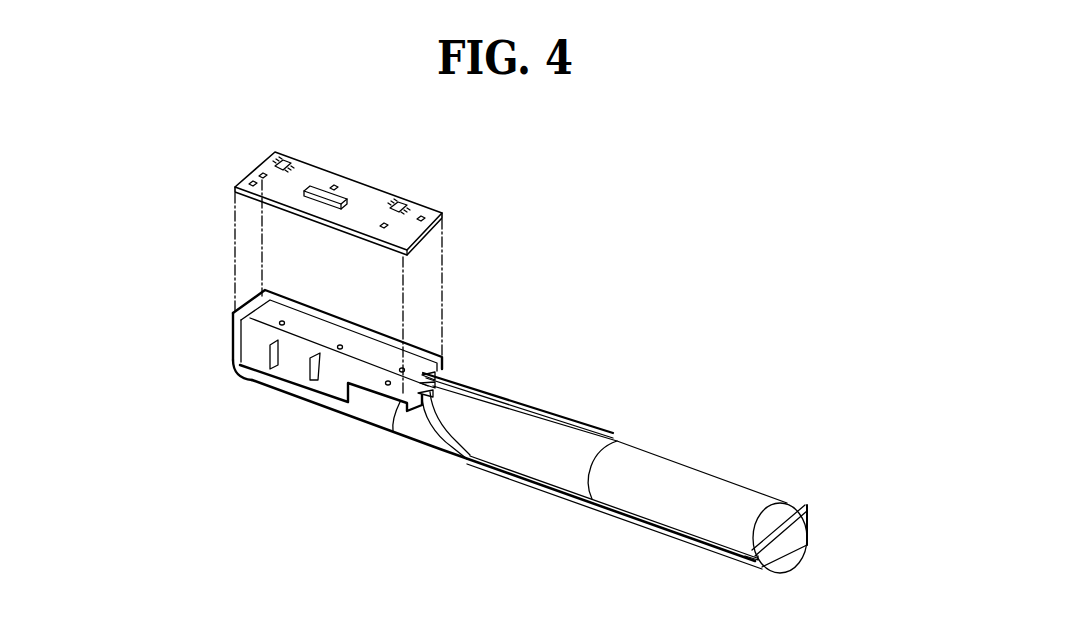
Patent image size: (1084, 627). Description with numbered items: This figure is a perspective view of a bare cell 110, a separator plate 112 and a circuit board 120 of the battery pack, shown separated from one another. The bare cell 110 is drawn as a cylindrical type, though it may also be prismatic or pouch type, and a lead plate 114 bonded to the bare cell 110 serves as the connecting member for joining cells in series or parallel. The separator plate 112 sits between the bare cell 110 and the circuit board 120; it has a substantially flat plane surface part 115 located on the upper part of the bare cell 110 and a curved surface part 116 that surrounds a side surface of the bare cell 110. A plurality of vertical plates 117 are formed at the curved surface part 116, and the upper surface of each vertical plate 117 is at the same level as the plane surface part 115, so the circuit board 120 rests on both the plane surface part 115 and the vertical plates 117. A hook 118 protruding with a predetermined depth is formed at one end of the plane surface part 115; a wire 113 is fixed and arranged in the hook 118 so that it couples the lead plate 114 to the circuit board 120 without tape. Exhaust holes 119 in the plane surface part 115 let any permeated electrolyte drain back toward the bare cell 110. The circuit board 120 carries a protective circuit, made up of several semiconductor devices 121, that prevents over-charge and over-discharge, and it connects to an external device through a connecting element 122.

The bare cell 110 is at (698, 480).
The separator plate 112 is at (228, 326).
The wire 113 is at (503, 412).
The lead plate 114 is at (788, 540).
The plane surface part 115 is at (377, 382).
The curved surface part 116 is at (297, 365).
The vertical plate 117 is at (253, 365).
The hook 118 is at (410, 400).
The coupling hole 119 is at (283, 321).
The circuit board 120 is at (324, 180).
The semiconductor device 121 is at (280, 158).
The connecting element 122 is at (315, 190).